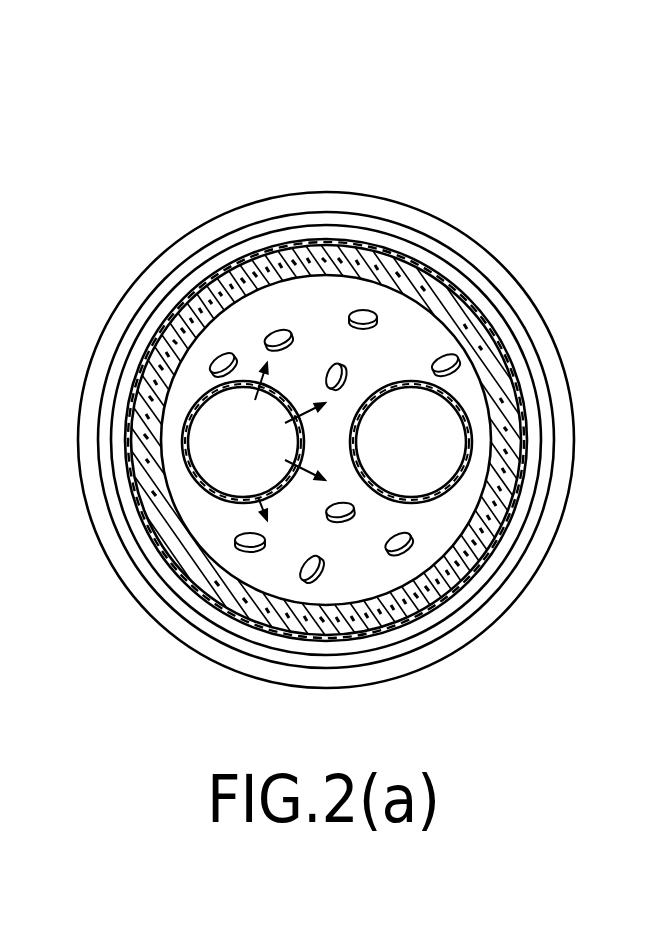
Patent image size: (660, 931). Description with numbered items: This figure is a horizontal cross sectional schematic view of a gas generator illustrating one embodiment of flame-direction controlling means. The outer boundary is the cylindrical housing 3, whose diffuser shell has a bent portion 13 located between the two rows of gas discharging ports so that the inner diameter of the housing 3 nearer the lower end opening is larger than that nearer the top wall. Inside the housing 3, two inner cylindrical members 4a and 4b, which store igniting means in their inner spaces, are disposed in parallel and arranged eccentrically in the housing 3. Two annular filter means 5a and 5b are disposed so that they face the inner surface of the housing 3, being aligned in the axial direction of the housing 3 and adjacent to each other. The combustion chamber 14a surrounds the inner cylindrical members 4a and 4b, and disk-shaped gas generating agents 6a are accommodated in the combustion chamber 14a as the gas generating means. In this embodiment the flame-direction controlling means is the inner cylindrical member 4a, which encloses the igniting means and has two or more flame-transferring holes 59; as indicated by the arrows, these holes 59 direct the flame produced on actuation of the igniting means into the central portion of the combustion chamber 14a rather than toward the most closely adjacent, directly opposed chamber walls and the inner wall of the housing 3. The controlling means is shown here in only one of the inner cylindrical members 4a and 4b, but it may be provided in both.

The cylindrical housing 3 is at (538, 357).
The bent portion 13 is at (517, 330).
The filter means 5a is at (525, 433).
The filter means 5b is at (523, 493).
The combustion chamber 14a is at (430, 543).
The inner cylindrical member 4a is at (213, 391).
The inner cylindrical member 4b is at (385, 385).
The gas generating agent 6a is at (363, 309).
The flame-transferring holes 59 is at (264, 388).